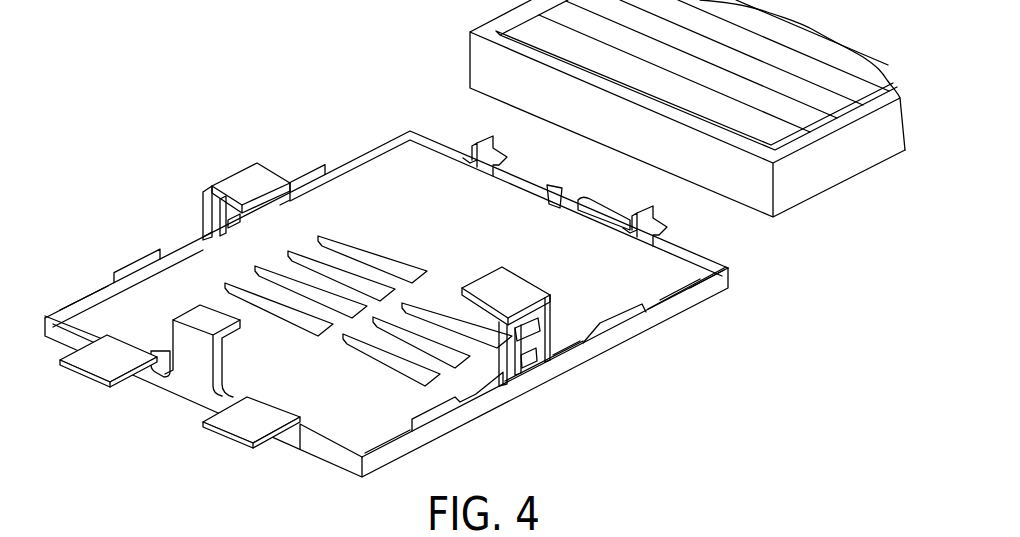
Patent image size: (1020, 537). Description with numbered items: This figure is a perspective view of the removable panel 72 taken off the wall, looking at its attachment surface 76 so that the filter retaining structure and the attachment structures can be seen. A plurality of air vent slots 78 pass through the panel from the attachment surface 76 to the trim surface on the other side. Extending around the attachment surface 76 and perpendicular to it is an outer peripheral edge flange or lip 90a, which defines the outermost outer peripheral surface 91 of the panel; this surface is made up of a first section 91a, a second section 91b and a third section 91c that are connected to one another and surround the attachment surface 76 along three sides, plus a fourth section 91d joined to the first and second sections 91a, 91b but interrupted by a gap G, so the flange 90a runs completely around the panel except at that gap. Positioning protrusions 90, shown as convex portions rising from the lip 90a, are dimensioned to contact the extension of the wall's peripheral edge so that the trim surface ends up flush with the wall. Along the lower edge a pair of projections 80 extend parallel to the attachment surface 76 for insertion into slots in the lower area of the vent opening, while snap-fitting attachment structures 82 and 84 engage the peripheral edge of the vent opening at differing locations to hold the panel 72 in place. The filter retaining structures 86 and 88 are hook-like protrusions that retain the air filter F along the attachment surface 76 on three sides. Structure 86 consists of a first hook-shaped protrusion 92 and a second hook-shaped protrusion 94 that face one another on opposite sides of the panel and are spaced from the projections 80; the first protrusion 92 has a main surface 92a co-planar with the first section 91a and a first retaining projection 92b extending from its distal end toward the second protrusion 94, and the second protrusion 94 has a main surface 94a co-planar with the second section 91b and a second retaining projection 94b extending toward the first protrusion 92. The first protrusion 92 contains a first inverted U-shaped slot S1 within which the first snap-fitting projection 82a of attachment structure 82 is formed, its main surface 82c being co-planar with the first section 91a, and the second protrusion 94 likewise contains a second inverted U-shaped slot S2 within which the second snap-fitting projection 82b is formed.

The removable panel 72 is at (179, 132).
The attachment surface 76 is at (402, 192).
The air vent slots 78 is at (360, 350).
The projections 80 is at (97, 358).
The attachment structure 82 is at (375, 320).
The first snap-fitting projection 82a is at (543, 360).
The second snap-fitting projection 82b is at (233, 225).
The main surface 82c is at (527, 372).
The attachment structure 84 is at (503, 162).
The filter retaining structure 86 is at (248, 185).
The filter retaining structure 88 is at (202, 320).
The positioning protrusions 90 is at (313, 167).
The outer peripheral edge flange 90a is at (672, 310).
The outer peripheral surface 91 is at (703, 293).
The first section 91a is at (567, 363).
The second section 91b is at (75, 300).
The third section 91c is at (300, 440).
The fourth section 91d is at (580, 200).
The first hook-shaped protrusion 92 is at (505, 347).
The main surface 92a is at (510, 352).
The first retaining projection 92b is at (483, 290).
The second hook-shaped protrusion 94 is at (374, 267).
The main surface 94a is at (200, 207).
The second retaining projection 94b is at (268, 180).
The air filter F is at (815, 48).
The gap G is at (578, 207).
The first inverted U-shaped slot S1 is at (550, 387).
The second inverted U-shaped slot S2 is at (227, 237).